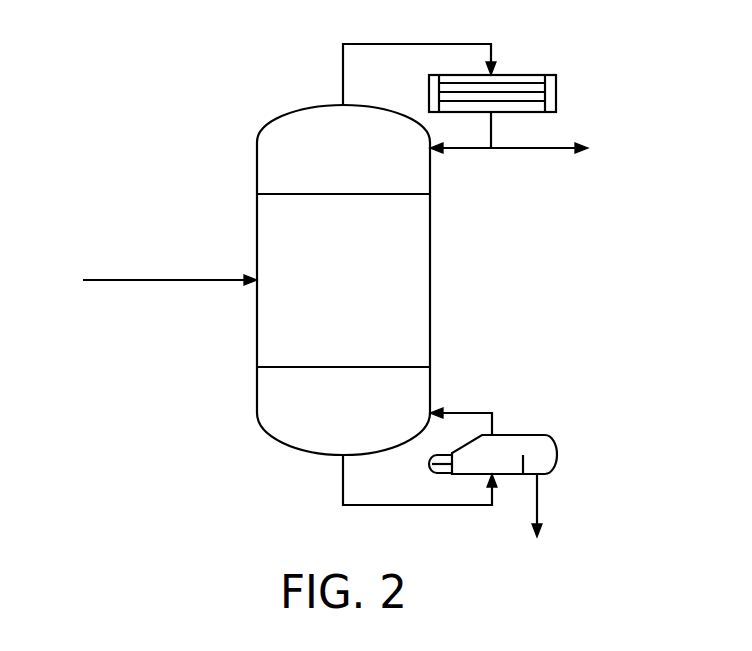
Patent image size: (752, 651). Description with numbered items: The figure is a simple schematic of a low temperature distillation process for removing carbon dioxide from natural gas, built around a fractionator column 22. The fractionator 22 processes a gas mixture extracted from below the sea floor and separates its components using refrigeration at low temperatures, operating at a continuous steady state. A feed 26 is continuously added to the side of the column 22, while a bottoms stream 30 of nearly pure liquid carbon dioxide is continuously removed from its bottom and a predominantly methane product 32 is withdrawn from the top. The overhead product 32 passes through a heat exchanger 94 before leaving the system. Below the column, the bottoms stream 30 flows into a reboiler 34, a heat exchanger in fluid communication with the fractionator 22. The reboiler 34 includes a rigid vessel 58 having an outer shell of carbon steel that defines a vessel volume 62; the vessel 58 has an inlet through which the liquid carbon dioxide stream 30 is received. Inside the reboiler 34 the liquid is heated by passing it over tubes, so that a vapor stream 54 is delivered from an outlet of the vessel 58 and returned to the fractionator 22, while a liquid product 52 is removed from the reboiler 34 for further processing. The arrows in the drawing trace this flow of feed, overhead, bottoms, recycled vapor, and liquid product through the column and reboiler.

The fractionator column 22 is at (212, 209).
The feed 26 is at (170, 280).
The bottoms stream 30 is at (340, 494).
The methane product 32 is at (358, 40).
The reboiler 34 is at (574, 445).
The liquid product 52 is at (540, 503).
The vapor stream 54 is at (482, 405).
The rigid vessel 58 is at (552, 468).
The vessel volume 62 is at (532, 444).
The condenser 94 is at (571, 86).